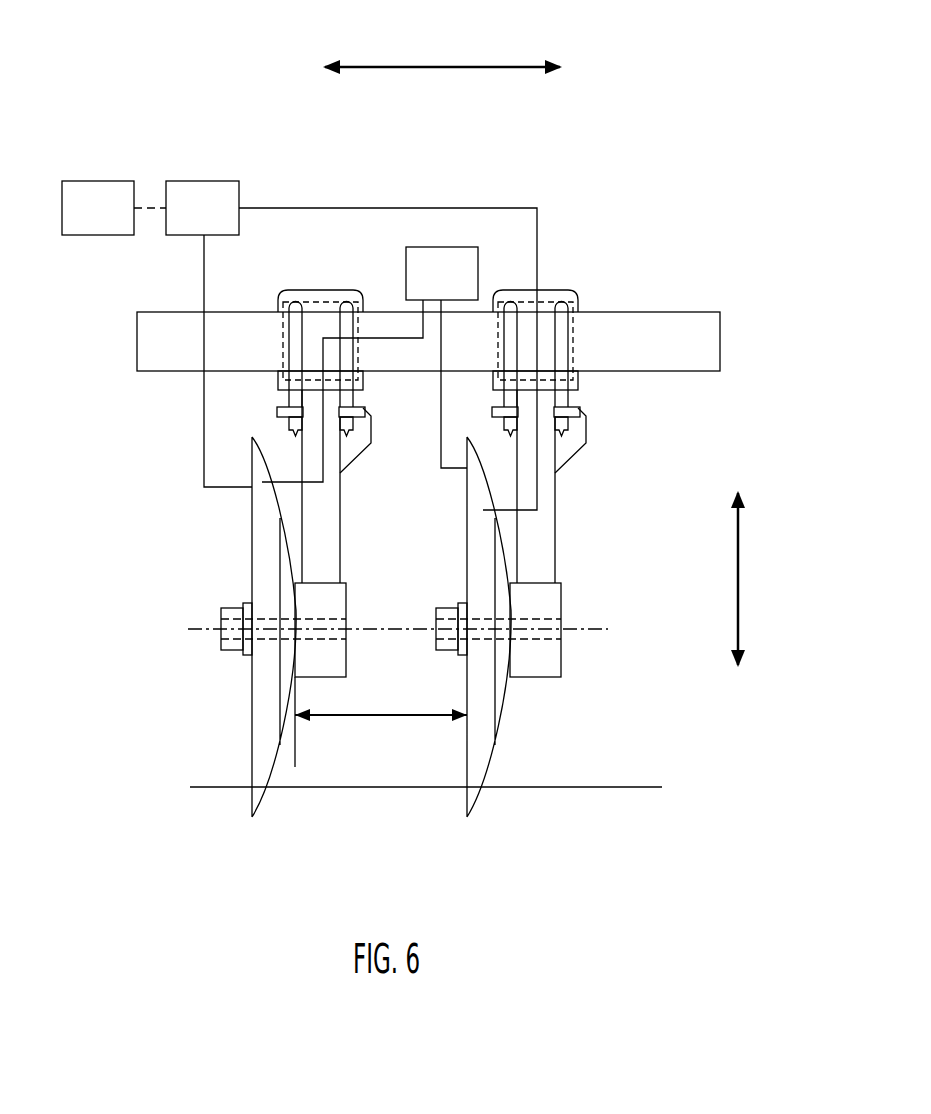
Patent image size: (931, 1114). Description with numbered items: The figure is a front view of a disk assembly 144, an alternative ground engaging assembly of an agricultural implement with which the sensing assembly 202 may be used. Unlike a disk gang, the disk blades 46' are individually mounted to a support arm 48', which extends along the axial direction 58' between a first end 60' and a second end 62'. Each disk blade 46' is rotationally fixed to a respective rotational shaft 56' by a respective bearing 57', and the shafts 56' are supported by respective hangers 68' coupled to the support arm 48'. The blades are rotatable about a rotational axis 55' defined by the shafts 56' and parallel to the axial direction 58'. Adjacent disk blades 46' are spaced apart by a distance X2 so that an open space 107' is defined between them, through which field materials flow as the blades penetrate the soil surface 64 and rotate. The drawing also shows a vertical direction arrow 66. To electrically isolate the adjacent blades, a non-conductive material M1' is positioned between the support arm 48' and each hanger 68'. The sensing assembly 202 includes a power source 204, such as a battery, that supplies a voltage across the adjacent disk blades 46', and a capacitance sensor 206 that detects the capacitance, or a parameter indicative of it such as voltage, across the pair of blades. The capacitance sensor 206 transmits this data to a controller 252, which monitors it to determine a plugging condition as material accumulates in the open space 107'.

The axial direction 58' is at (442, 44).
The sensing assembly 202 is at (622, 159).
The controller 252 is at (120, 225).
The capacitance sensor 206 is at (224, 225).
The power source 204 is at (464, 291).
The disk assembly 144 is at (106, 350).
The support arm 48' is at (428, 313).
The non-conductive material M1' is at (433, 337).
The first end 60' is at (214, 460).
The second end 62' is at (615, 460).
The vertical adjustment direction 66 is at (738, 585).
The hanger 68' is at (458, 486).
The bearing 57' is at (456, 615).
The rotational shaft 56' is at (424, 615).
The rotational axis 55' is at (414, 635).
The disk blade 46' is at (370, 668).
The open space 107' is at (381, 715).
The distance X2 is at (390, 716).
The soil surface 64 is at (552, 787).